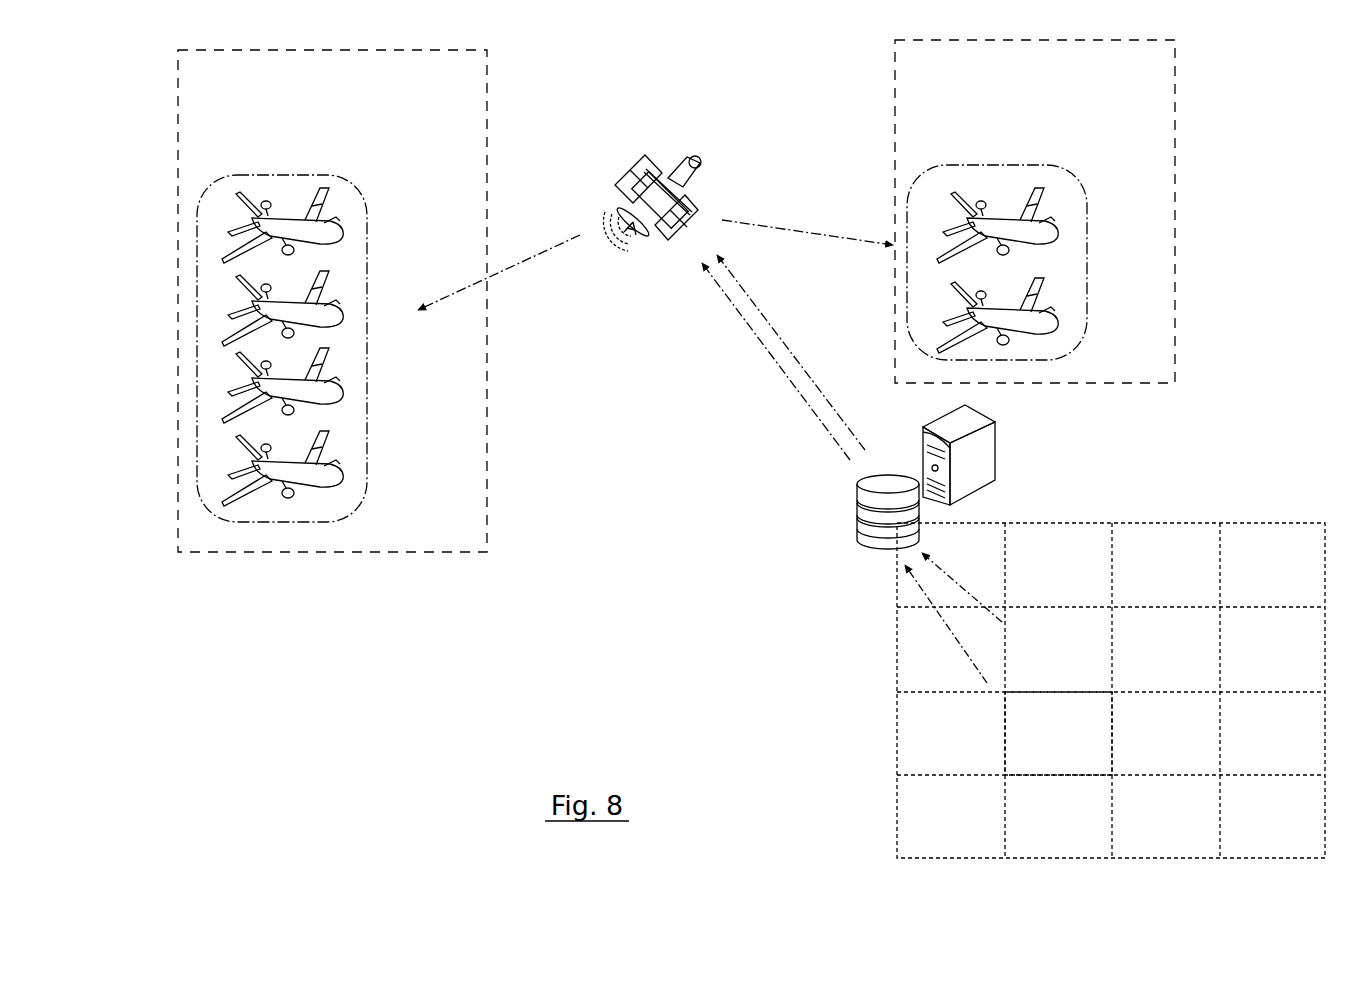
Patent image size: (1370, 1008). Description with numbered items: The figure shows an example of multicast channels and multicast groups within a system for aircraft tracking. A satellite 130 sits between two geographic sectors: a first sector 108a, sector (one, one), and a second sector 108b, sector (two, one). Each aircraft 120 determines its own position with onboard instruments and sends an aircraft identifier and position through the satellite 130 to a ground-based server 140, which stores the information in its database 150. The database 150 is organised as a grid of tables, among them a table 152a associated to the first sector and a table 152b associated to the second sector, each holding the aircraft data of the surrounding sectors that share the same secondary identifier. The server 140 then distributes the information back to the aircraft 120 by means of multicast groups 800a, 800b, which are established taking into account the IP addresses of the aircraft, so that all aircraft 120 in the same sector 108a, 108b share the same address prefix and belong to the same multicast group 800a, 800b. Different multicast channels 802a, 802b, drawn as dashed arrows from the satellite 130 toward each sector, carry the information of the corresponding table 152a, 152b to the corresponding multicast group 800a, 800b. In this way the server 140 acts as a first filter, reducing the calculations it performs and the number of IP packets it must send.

The first sector 108a is at (403, 97).
The second sector 108b is at (1088, 75).
The multicast group 800a is at (340, 177).
The multicast group 800b is at (1075, 178).
The aircraft 120 is at (332, 323).
The satellite 130 is at (648, 165).
The multicast channel 802a is at (715, 283).
The multicast channel 802b is at (760, 313).
The ground-based server 140 is at (978, 452).
The database 150 is at (868, 510).
The table 152a is at (1080, 622).
The table 152b is at (1037, 767).